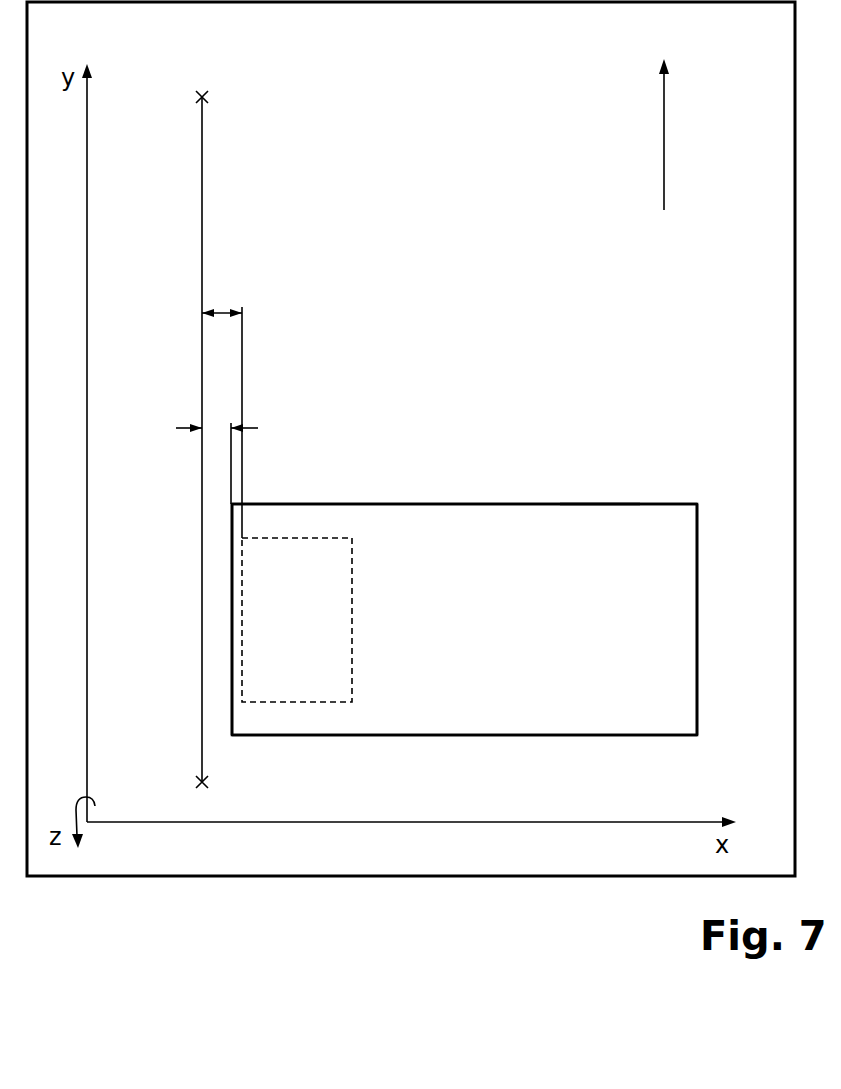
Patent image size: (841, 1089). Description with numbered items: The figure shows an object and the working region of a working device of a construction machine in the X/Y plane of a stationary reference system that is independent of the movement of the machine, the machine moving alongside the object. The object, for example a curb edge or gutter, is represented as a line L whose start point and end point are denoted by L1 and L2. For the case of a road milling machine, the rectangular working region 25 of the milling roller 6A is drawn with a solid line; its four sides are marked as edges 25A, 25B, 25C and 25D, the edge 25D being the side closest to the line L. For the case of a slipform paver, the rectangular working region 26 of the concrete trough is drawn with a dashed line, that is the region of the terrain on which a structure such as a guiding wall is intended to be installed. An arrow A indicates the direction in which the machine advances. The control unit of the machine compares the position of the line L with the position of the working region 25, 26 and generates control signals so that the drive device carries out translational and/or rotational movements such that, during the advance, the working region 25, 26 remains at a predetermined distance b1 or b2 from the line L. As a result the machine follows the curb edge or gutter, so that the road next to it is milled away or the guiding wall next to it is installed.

The working region 25 is at (655, 495).
The upper edge of region 25A is at (448, 502).
The lower edge of region 25B is at (451, 737).
The right edge of region 25C is at (697, 634).
The left edge of region 25D is at (232, 634).
The working region 26 is at (305, 530).
The milling roller 6A is at (598, 495).
The direction of movement A is at (664, 147).
The line L is at (202, 192).
The start point L1 is at (219, 790).
The end point L2 is at (219, 100).
The predetermined distance b1 is at (217, 432).
The predetermined distance b2 is at (222, 310).